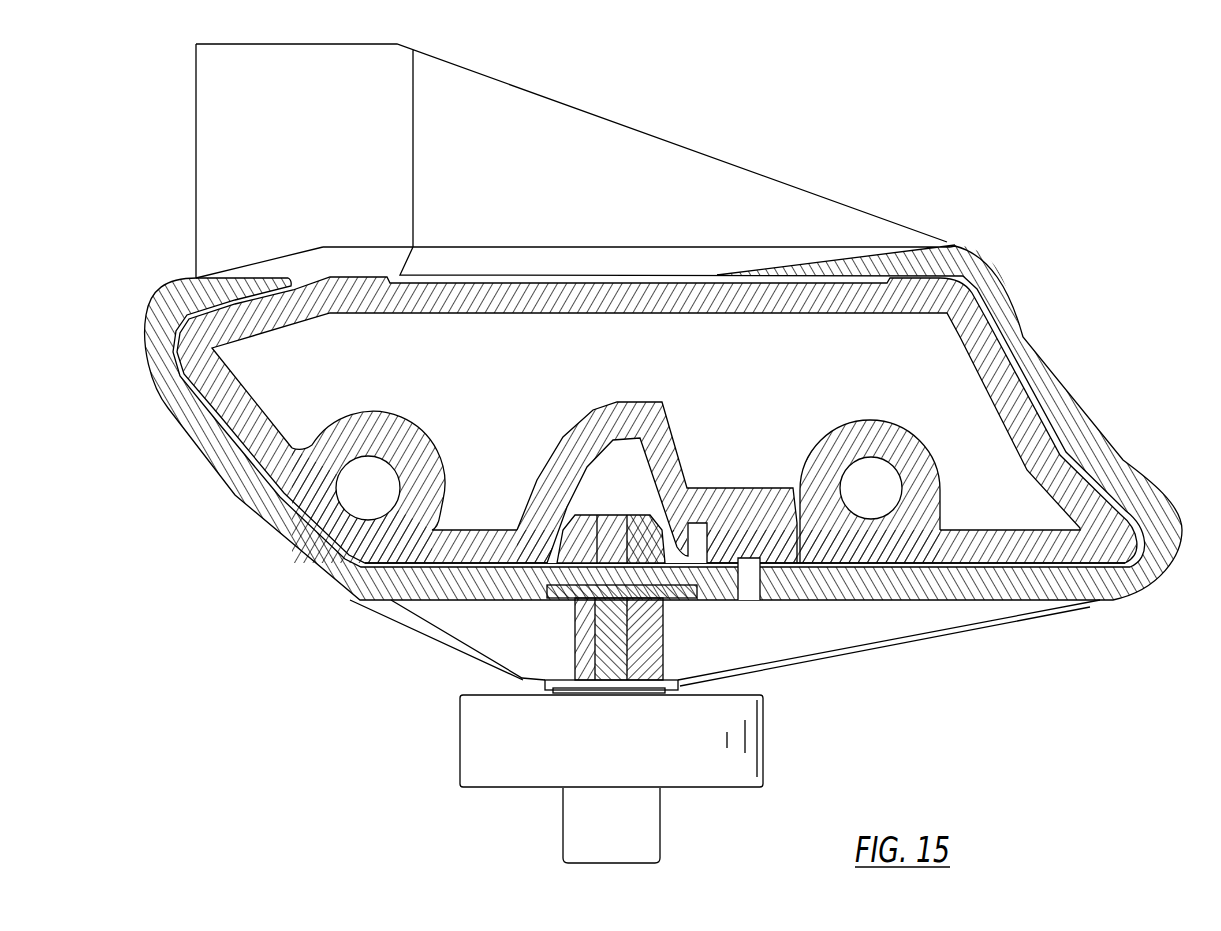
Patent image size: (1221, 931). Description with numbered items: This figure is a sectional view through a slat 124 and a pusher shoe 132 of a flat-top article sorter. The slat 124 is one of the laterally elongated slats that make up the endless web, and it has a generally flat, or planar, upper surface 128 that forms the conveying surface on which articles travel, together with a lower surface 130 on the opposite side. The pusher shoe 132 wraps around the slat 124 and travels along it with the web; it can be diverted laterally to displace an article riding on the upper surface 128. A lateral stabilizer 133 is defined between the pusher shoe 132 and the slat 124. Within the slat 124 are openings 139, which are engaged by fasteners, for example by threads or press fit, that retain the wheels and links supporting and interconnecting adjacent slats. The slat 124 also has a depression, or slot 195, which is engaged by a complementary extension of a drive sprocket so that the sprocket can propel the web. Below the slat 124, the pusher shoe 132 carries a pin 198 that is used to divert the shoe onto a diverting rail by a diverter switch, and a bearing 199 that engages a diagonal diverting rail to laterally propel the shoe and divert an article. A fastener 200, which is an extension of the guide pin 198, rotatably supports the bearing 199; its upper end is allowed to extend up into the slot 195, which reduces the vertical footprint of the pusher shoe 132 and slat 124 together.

The slat 124 is at (1047, 453).
The upper surface 128 is at (697, 282).
The lower surface 130 is at (997, 563).
The pusher shoe 132 is at (947, 242).
The lateral stabilizer 133 is at (730, 533).
The opening 139 is at (368, 468).
The slot 195 is at (587, 467).
The pin 198 is at (663, 810).
The bearing 199 is at (767, 757).
The fastener 200 is at (577, 517).